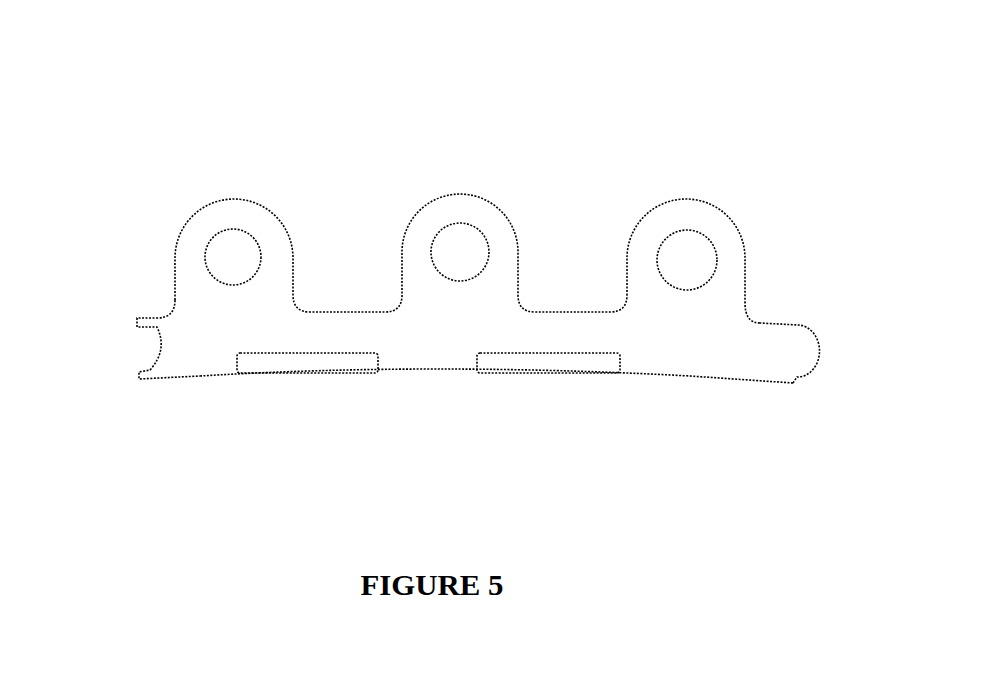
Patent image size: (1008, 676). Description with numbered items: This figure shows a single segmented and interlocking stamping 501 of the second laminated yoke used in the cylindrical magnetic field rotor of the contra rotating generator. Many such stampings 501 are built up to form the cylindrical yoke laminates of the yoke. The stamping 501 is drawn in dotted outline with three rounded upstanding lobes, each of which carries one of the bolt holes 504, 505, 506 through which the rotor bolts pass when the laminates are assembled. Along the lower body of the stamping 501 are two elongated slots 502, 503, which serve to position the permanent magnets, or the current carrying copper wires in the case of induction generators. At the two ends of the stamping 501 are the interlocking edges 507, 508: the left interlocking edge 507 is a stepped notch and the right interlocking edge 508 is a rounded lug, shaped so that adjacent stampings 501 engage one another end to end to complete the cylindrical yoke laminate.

The segmented and interlocking stamping 501 is at (667, 200).
The slot 502 is at (302, 353).
The slot 503 is at (567, 365).
The bolt hole 504 is at (228, 253).
The bolt hole 505 is at (445, 243).
The bolt hole 506 is at (682, 260).
The interlocking edge 507 is at (163, 350).
The interlocking edge 508 is at (778, 365).